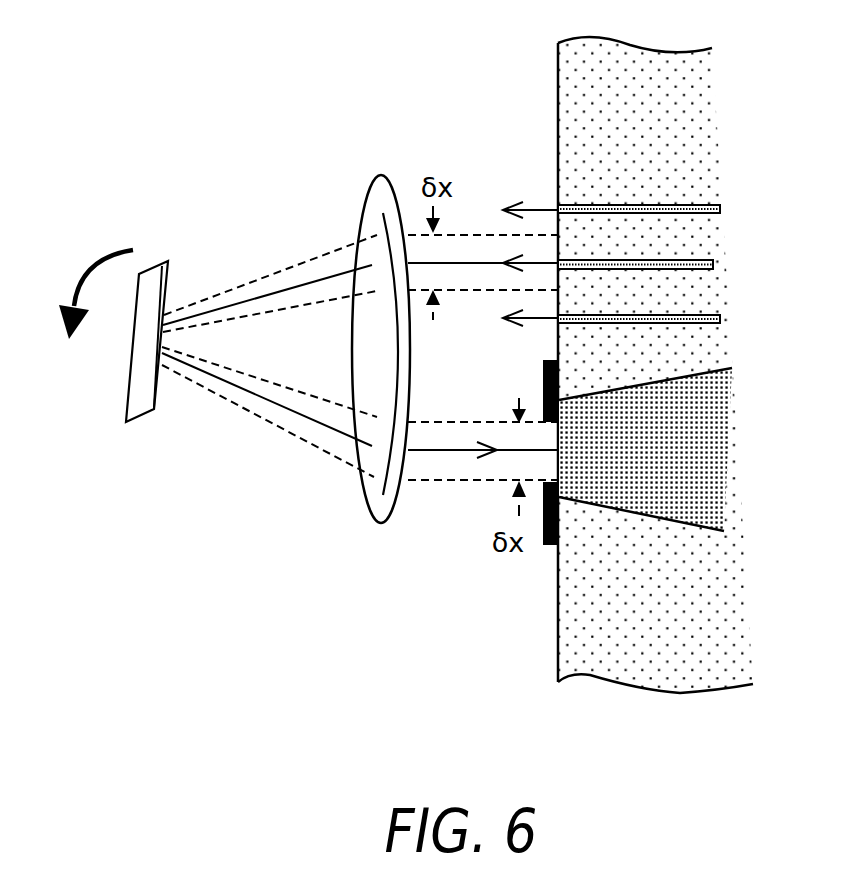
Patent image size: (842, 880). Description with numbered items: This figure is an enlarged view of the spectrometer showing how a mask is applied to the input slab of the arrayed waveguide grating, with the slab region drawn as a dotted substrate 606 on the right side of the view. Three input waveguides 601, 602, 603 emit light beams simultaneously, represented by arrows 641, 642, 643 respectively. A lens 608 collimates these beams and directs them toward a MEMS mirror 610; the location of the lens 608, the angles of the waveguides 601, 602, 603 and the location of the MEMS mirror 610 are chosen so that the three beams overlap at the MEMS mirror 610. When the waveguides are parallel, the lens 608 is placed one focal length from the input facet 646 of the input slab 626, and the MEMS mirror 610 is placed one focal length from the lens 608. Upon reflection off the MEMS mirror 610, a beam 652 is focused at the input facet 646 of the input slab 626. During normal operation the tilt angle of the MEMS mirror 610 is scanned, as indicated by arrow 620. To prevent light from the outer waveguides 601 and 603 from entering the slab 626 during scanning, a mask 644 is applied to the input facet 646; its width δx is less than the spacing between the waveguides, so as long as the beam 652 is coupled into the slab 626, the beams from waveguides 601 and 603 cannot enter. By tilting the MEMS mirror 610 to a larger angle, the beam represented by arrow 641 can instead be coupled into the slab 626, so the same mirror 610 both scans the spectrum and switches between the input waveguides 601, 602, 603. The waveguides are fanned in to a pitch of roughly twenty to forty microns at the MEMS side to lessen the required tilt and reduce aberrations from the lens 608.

The input waveguide 601 is at (720, 211).
The input waveguide 602 is at (713, 268).
The input waveguide 603 is at (720, 323).
The substrate / photonic chip 606 is at (691, 690).
The lens 608 is at (382, 175).
The MEMS mirror 610 is at (149, 273).
The arrow 620 is at (88, 288).
The input slab 626 is at (659, 517).
The arrow 641 is at (540, 209).
The arrow 642 is at (495, 263).
The arrow 643 is at (503, 318).
The mask 644 is at (552, 548).
The input facet 646 is at (558, 471).
The beam 652 is at (331, 430).